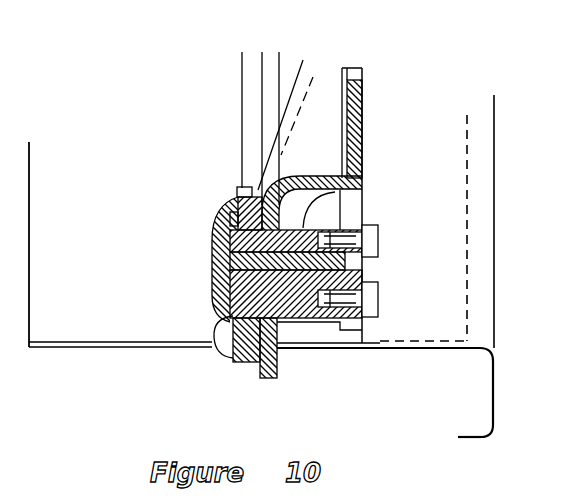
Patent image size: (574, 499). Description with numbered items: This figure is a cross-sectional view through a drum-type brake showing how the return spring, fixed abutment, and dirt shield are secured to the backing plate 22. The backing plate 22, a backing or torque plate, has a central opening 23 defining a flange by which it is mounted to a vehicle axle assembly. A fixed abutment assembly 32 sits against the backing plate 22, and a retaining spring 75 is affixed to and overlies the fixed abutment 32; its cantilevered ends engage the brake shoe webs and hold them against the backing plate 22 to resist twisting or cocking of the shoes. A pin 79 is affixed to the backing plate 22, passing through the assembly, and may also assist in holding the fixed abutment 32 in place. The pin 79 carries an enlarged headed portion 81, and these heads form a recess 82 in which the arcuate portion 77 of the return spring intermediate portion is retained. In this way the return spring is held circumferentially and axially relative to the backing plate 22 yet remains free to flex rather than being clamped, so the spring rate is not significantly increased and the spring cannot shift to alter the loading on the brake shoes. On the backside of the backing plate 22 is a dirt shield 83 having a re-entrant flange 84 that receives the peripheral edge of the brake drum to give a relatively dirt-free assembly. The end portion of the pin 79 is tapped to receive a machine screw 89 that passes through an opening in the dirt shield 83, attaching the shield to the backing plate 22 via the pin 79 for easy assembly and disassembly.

The backing plate 22 is at (362, 111).
The central opening 23 is at (352, 78).
The fixed abutment assembly 32 is at (236, 192).
The retaining spring 75 is at (217, 212).
The arcuate portion 77 is at (215, 262).
The pins 79 is at (347, 180).
The enlarged headed portions 81 is at (358, 206).
The recess 82 is at (347, 271).
The dirt shield 83 is at (495, 388).
The re-entrant flange 84 is at (470, 438).
The machine screw 89 is at (378, 233).